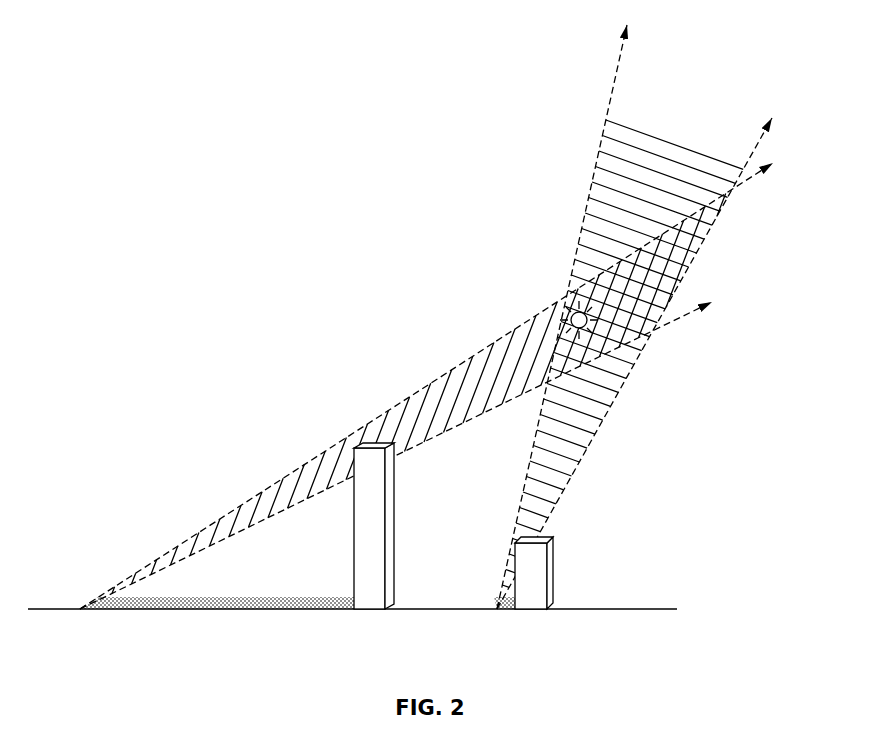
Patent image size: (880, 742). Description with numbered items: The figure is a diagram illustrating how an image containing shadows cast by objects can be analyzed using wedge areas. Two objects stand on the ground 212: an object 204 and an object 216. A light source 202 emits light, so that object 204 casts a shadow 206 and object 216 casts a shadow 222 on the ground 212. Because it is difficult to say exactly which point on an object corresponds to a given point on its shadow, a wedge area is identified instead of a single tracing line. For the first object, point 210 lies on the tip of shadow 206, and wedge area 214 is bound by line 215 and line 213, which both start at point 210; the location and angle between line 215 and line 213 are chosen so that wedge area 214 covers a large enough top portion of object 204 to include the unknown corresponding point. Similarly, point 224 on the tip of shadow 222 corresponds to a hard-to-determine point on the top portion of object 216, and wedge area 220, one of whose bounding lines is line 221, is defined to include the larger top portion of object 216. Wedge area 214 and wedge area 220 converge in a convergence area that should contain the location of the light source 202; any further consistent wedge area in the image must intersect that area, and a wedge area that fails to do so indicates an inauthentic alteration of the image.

The light source 202 is at (650, 293).
The object 204 is at (375, 531).
The shadow 206 is at (249, 612).
The point 210 is at (82, 612).
The ground 212 is at (696, 607).
The line 213 is at (248, 528).
The wedge area 214 is at (412, 410).
The line 215 is at (239, 506).
The object 216 is at (540, 573).
The wedge area 220 is at (590, 410).
The line 221 is at (570, 470).
The shadow 222 is at (503, 612).
The point 224 is at (493, 612).